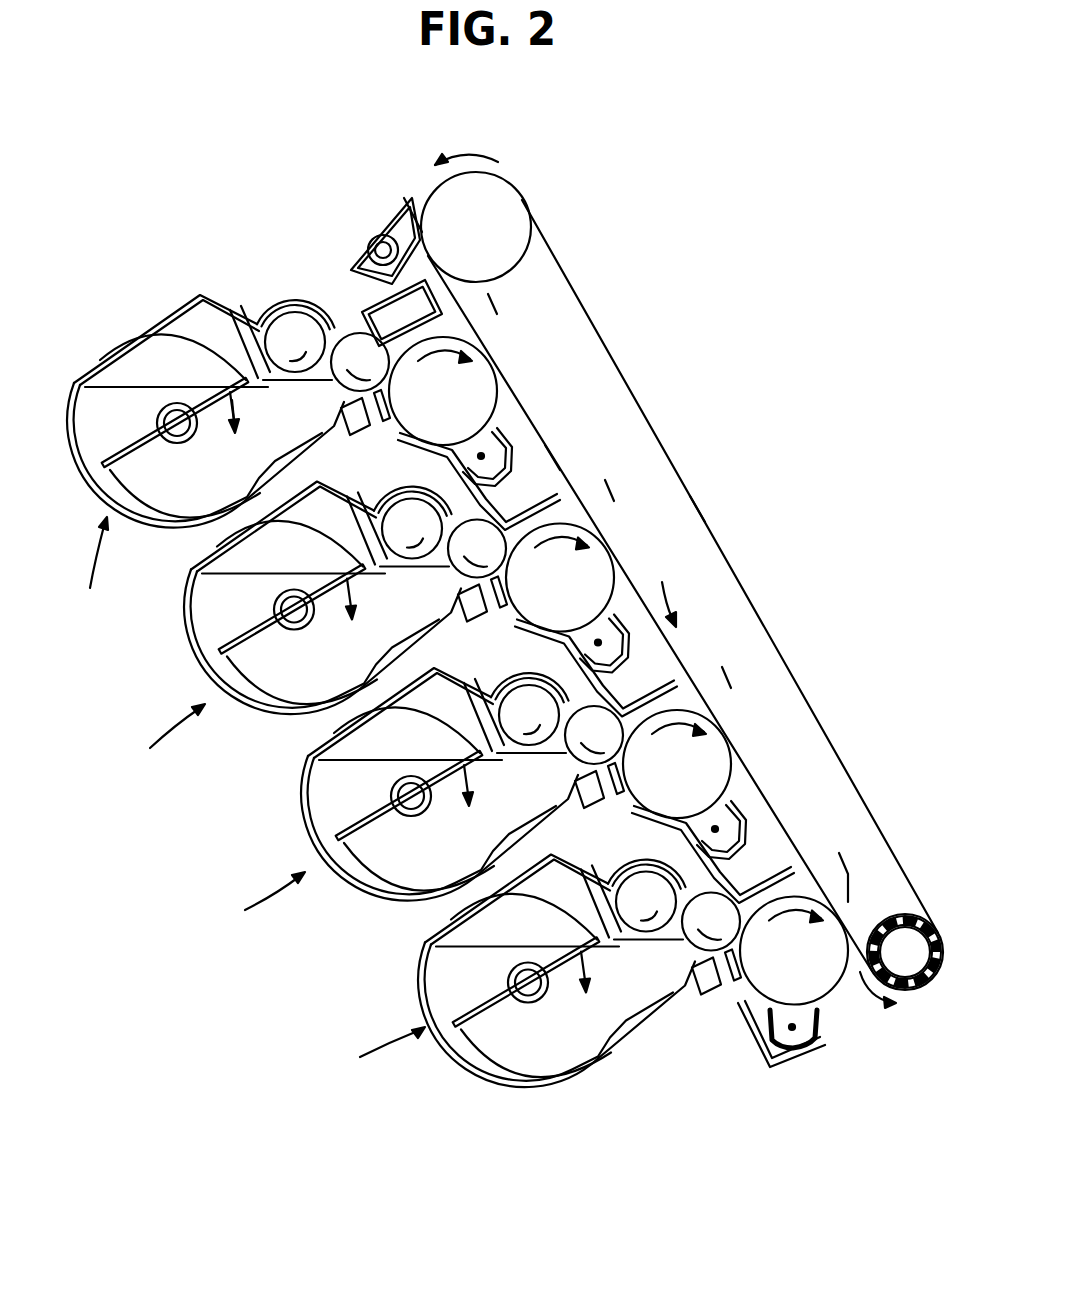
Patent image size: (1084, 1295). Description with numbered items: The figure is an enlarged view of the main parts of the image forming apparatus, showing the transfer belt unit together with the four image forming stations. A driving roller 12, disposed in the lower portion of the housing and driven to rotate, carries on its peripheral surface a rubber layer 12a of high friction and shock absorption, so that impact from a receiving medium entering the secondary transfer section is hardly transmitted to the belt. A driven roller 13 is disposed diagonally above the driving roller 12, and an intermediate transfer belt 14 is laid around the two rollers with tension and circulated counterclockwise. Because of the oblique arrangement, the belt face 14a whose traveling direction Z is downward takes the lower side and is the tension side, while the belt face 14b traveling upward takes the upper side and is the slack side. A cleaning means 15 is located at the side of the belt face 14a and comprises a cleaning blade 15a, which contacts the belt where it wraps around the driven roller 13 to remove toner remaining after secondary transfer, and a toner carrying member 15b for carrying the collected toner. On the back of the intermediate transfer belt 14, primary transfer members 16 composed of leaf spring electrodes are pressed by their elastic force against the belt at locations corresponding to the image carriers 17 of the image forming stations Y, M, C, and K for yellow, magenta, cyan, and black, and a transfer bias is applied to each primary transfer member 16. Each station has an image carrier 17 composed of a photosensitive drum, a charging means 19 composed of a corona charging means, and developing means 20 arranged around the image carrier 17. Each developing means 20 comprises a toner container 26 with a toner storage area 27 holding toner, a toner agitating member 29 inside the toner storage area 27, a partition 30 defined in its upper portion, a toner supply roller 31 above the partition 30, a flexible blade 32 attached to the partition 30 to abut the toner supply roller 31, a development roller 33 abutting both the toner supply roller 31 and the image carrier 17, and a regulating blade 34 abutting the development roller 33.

The driving roller 12 is at (903, 912).
The rubber layer 12a is at (907, 990).
The driven roller 13 is at (503, 205).
The intermediate transfer belt 14 is at (640, 392).
The belt face 14a is at (552, 447).
The belt face 14b is at (705, 507).
The cleaning means 15 is at (352, 223).
The cleaning blade 15a is at (402, 198).
The toner carrying member 15b is at (364, 220).
The primary transfer member 16 is at (497, 313).
The image carrier 17 is at (457, 407).
The charging means 19 is at (503, 478).
The developing means 20 is at (150, 527).
The toner container 26 is at (157, 318).
The toner storage area 27 is at (105, 398).
The toner agitating member 29 is at (203, 387).
The partition 30 is at (232, 392).
The toner supply roller 31 is at (294, 314).
The flexible blade 32 is at (272, 318).
The development roller 33 is at (340, 335).
The regulating blade 34 is at (352, 447).
The image forming station Y is at (94, 567).
The image forming station M is at (162, 737).
The image forming station C is at (260, 899).
The image forming station K is at (376, 1051).
The traveling direction Z is at (681, 595).